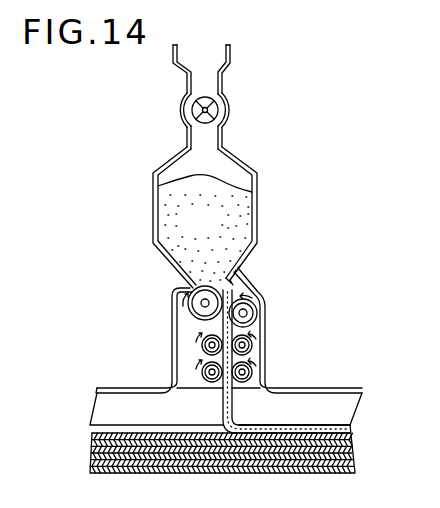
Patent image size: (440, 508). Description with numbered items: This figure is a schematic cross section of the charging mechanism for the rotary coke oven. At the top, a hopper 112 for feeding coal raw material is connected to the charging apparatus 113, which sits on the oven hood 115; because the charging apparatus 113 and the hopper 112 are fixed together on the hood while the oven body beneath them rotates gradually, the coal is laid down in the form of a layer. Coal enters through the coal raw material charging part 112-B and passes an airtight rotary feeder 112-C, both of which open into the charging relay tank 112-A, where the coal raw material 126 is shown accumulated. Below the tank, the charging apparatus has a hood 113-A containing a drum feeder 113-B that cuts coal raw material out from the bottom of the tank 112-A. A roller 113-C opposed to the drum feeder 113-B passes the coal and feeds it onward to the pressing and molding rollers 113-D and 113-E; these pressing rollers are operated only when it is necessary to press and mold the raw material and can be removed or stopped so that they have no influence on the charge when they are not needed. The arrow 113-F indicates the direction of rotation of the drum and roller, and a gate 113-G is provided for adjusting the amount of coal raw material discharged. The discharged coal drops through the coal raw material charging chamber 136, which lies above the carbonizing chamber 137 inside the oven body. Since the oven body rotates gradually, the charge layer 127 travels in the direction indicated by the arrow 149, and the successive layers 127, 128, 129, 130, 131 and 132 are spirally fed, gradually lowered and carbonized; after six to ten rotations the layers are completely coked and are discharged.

The hopper 112 is at (200, 166).
The charging relay tank 112-A is at (258, 177).
The coal raw material charging part 112-B is at (231, 58).
The airtight rotary feeder 112-C is at (229, 112).
The charging apparatus 113 is at (212, 317).
The hood 113-A is at (248, 318).
The drum feeder 113-B is at (193, 314).
The roller 113-C is at (262, 300).
The pressing and molding roller 113-D is at (250, 345).
The pressing and molding roller 113-E is at (250, 371).
The arrow 113-F is at (186, 298).
The gate 113-G is at (250, 284).
The oven hood 115 is at (97, 388).
The coal raw material 126 is at (205, 228).
The charge layer 127 is at (351, 430).
The layer 128 is at (351, 440).
The layer 129 is at (93, 453).
The layer 130 is at (352, 458).
The layer 131 is at (93, 463).
The layer 132 is at (355, 470).
The coal raw material charging chamber 136 is at (178, 424).
The carbonizing chamber 137 is at (92, 436).
The arrow 149 is at (270, 412).